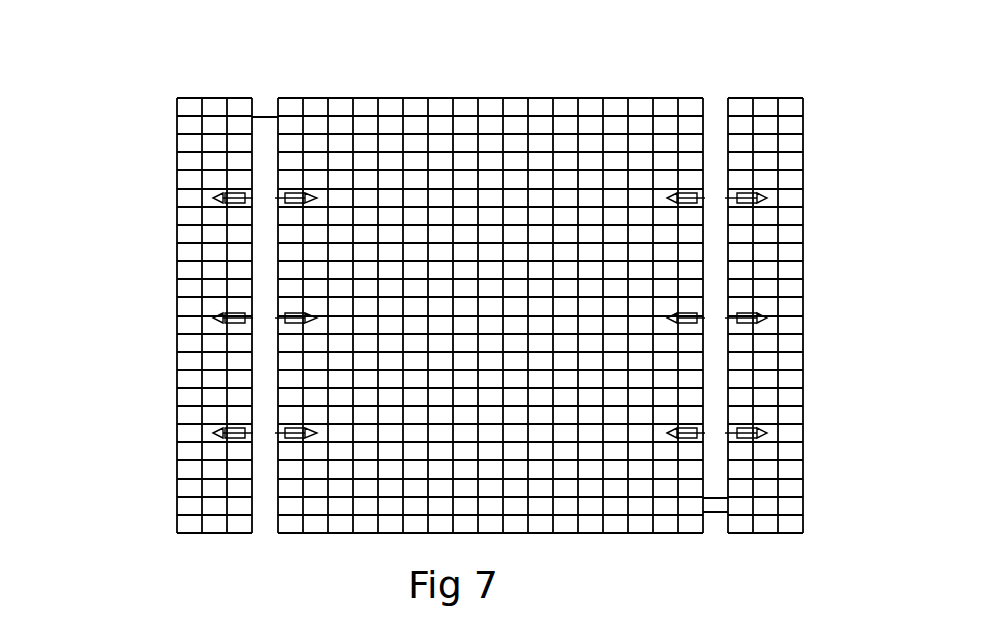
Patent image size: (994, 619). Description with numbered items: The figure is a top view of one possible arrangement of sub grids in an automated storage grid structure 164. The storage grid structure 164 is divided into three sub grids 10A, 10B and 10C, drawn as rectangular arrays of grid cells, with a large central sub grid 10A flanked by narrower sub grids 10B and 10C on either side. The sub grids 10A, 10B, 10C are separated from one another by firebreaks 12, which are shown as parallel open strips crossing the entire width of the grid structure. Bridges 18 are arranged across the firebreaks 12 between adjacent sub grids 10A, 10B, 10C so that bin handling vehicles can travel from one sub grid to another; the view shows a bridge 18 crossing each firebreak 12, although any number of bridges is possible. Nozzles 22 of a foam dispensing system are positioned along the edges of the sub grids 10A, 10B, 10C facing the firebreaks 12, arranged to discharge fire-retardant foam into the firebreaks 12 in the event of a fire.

The sub grid 10A is at (464, 97).
The sub grid 10B is at (215, 97).
The sub grid 10C is at (764, 97).
The firebreak 12 is at (716, 98).
The bridge 18 is at (260, 113).
The nozzle 22 is at (750, 197).
The wall assembly 164 is at (838, 283).